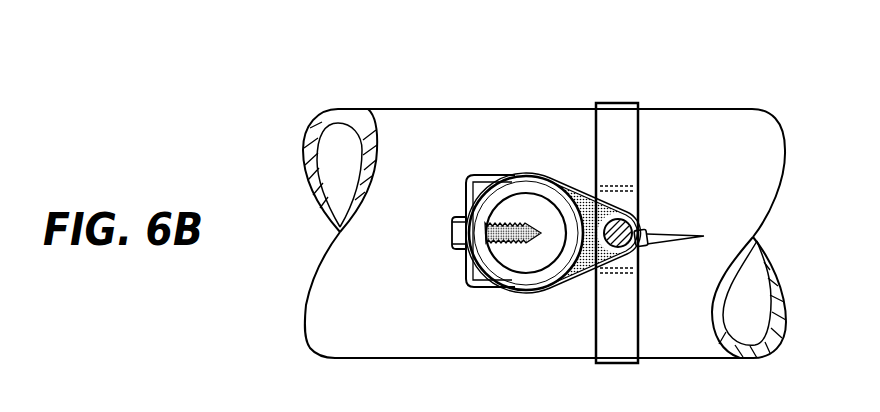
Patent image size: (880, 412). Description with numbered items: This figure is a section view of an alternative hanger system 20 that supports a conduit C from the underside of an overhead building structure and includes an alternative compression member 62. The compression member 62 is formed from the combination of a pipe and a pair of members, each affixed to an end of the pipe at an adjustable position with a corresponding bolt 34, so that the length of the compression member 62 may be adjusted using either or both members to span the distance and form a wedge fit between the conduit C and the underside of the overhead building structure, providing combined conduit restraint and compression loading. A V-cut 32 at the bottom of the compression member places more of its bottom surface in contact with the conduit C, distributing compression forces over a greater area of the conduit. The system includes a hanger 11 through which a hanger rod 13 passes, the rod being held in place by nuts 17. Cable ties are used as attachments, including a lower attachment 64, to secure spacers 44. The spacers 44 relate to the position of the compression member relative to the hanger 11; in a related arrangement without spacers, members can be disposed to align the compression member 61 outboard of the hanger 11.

The conduit C is at (748, 147).
The hanger system 20 is at (608, 72).
The hanger 11 is at (597, 103).
The V-cut 32 is at (465, 262).
The bolt 34 is at (450, 233).
The compression member 62 is at (389, 289).
The compression member 61 is at (520, 182).
The spacers 44 is at (587, 260).
The lower attachment 64 is at (580, 190).
The nuts 17 is at (633, 223).
The hanger rod 13 is at (642, 229).